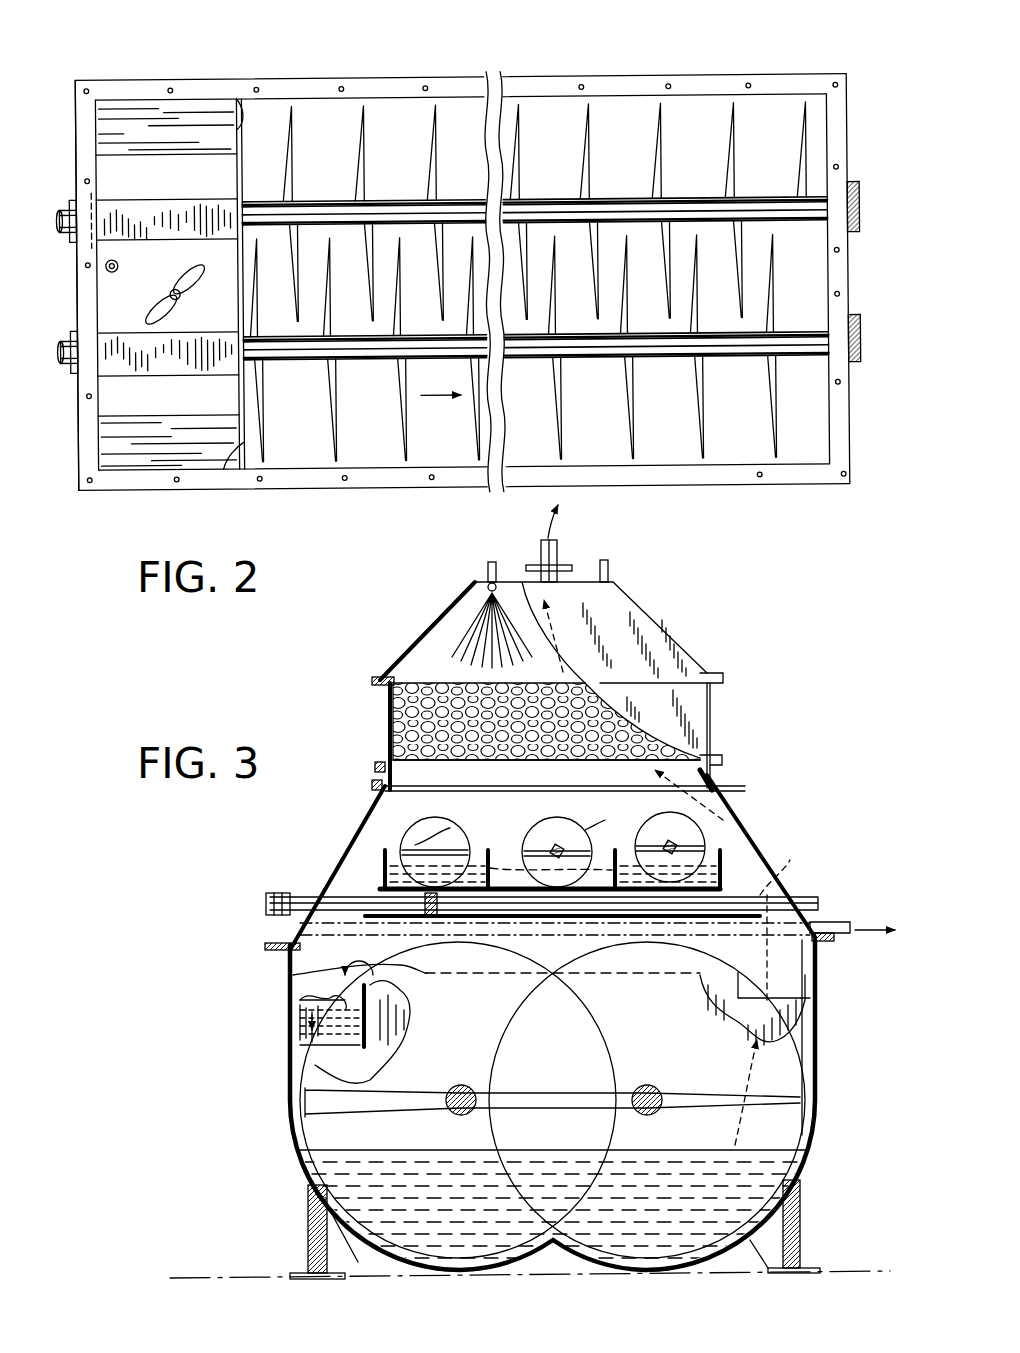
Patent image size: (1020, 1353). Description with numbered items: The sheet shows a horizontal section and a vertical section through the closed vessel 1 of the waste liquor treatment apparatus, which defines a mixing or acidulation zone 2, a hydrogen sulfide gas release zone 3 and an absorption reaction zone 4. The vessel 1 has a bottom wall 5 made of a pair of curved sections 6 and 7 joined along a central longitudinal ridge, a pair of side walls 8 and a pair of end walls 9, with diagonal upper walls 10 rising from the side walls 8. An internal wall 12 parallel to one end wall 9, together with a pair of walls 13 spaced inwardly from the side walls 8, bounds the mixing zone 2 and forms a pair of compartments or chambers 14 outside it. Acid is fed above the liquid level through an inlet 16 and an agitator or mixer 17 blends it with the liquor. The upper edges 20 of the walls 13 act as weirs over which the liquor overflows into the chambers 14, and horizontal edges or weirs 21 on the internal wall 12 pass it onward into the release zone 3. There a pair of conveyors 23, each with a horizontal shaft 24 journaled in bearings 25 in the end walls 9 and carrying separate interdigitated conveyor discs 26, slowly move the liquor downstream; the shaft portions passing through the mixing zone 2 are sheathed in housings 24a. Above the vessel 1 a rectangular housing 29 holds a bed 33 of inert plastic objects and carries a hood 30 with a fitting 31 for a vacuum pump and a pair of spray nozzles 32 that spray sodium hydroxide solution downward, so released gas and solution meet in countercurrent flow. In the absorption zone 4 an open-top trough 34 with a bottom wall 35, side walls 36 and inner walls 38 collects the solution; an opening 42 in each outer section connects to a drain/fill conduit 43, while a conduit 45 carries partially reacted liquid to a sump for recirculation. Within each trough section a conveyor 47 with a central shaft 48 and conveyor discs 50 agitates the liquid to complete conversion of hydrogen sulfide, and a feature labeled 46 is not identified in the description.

In FIG. 2, the closed vessel 1 is at (301, 78).
In FIG. 3, the closed vessel 1 is at (785, 835).
In FIG. 2, the mixing or acidulation zone 2 is at (112, 284).
In FIG. 2, the hydrogen sulfide gas release zone 3 is at (552, 125).
In FIG. 3, the hydrogen sulfide gas release zone 3 is at (805, 1025).
In FIG. 3, the absorption reaction zone 4 is at (372, 812).
In FIG. 2, the bottom wall 5 is at (690, 112).
In FIG. 3, the bottom wall 5 is at (522, 1258).
In FIG. 3, the curved section 6 is at (395, 1267).
In FIG. 3, the curved section 7 is at (720, 1255).
In FIG. 2, the side wall 8 is at (735, 95).
In FIG. 3, the side wall 8 is at (287, 1028).
In FIG. 2, the end wall 9 is at (97, 440).
In FIG. 3, the diagonal upper wall 10 is at (350, 842).
In FIG. 2, the internal wall 12 is at (243, 192).
In FIG. 3, the internal wall 12 is at (330, 1062).
In FIG. 2, the wall 13 is at (200, 148).
In FIG. 3, the wall 13 is at (350, 1027).
In FIG. 2, the compartment or chamber 14 is at (146, 118).
In FIG. 2, the inlet 16 is at (106, 262).
In FIG. 2, the agitator or mixer 17 is at (192, 285).
In FIG. 3, the upper edge 20 is at (300, 975).
In FIG. 2, the horizontal edge or weir 21 is at (238, 118).
In FIG. 3, the horizontal edge or weir 21 is at (300, 1000).
In FIG. 2, the conveyor 23 is at (814, 164).
In FIG. 3, the conveyor 23 is at (305, 1172).
In FIG. 2, the horizontal shaft 24 is at (686, 205).
In FIG. 3, the horizontal shaft 24 is at (470, 1088).
In FIG. 2, the housing 24a is at (185, 210).
In FIG. 2, the bearing 25 is at (75, 192).
In FIG. 2, the conveyor disc 26 is at (368, 160).
In FIG. 3, the conveyor disc 26 is at (540, 1092).
In FIG. 3, the rectangular housing 29 is at (390, 703).
In FIG. 3, the hood 30 is at (642, 640).
In FIG. 3, the fitting 31 is at (556, 565).
In FIG. 3, the spray nozzle 32 is at (489, 580).
In FIG. 3, the bed 33 is at (390, 750).
In FIG. 3, the open-top trough 34 is at (725, 870).
In FIG. 3, the bottom wall 35 is at (515, 896).
In FIG. 3, the side wall 36 is at (370, 868).
In FIG. 3, the inner wall 38 is at (490, 884).
In FIG. 3, the opening 42 is at (398, 878).
In FIG. 3, the drain/fill conduit 43 is at (393, 915).
In FIG. 3, the conduit 45 is at (820, 898).
In FIG. 3, the liquid line 46 is at (597, 866).
In FIG. 3, the conveyor 47 is at (462, 846).
In FIG. 3, the central shaft 48 is at (437, 850).
In FIG. 3, the conveyor disc 50 is at (424, 830).